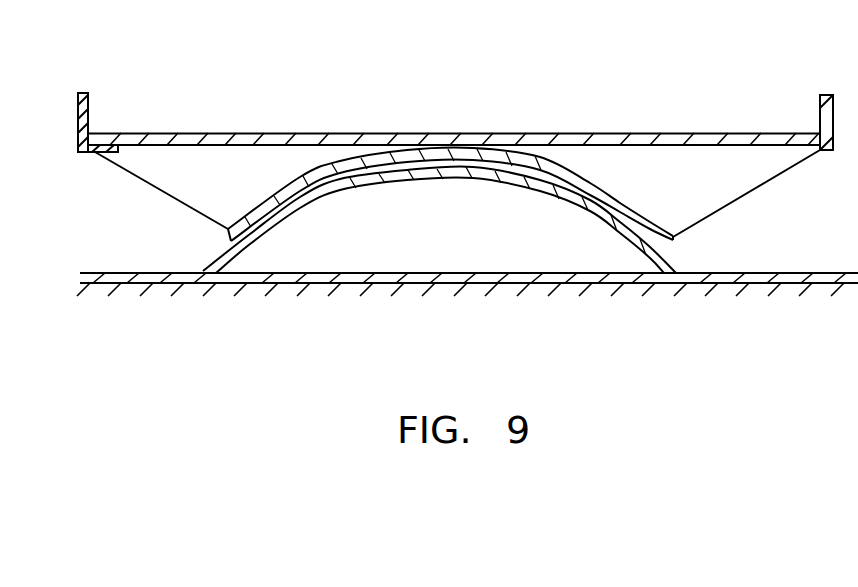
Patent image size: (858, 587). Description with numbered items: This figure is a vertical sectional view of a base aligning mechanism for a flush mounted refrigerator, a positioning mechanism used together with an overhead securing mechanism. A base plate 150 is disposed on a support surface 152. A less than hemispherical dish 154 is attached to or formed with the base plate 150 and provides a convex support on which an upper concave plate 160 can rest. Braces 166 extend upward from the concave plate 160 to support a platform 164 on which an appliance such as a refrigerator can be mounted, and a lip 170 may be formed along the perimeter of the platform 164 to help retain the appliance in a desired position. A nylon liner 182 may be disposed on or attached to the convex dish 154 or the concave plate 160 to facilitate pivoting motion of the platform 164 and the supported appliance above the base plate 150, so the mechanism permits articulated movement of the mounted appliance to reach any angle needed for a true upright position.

The base plate 150 is at (337, 273).
The support surface 152 is at (275, 331).
The less than hemispherical dish 154 is at (490, 172).
The upper concave plate 160 is at (643, 207).
The platform 164 is at (590, 134).
The braces 166 is at (767, 183).
The lip 170 is at (820, 113).
The nylon liner 182 is at (695, 273).